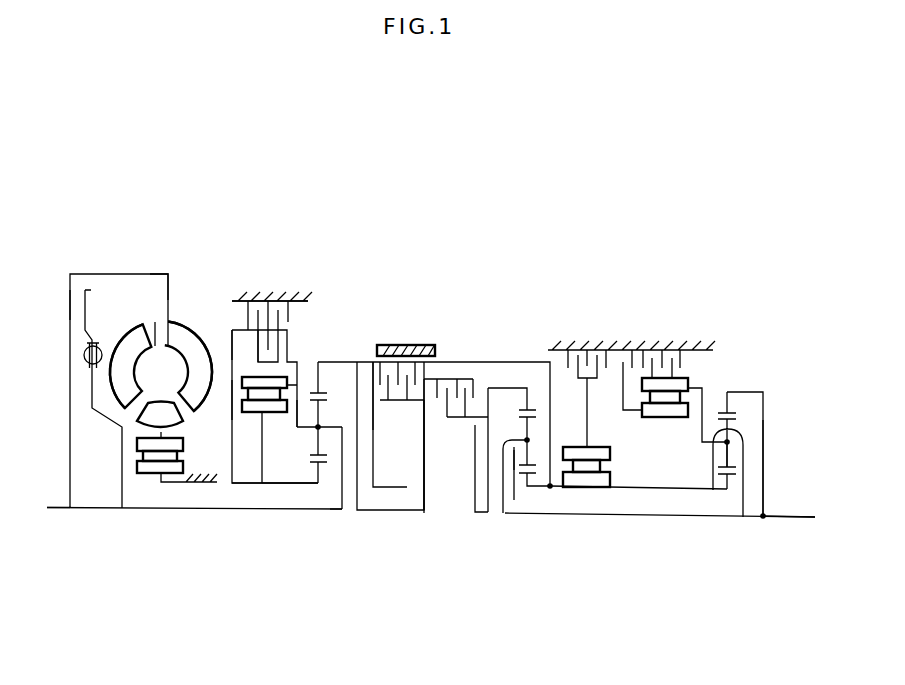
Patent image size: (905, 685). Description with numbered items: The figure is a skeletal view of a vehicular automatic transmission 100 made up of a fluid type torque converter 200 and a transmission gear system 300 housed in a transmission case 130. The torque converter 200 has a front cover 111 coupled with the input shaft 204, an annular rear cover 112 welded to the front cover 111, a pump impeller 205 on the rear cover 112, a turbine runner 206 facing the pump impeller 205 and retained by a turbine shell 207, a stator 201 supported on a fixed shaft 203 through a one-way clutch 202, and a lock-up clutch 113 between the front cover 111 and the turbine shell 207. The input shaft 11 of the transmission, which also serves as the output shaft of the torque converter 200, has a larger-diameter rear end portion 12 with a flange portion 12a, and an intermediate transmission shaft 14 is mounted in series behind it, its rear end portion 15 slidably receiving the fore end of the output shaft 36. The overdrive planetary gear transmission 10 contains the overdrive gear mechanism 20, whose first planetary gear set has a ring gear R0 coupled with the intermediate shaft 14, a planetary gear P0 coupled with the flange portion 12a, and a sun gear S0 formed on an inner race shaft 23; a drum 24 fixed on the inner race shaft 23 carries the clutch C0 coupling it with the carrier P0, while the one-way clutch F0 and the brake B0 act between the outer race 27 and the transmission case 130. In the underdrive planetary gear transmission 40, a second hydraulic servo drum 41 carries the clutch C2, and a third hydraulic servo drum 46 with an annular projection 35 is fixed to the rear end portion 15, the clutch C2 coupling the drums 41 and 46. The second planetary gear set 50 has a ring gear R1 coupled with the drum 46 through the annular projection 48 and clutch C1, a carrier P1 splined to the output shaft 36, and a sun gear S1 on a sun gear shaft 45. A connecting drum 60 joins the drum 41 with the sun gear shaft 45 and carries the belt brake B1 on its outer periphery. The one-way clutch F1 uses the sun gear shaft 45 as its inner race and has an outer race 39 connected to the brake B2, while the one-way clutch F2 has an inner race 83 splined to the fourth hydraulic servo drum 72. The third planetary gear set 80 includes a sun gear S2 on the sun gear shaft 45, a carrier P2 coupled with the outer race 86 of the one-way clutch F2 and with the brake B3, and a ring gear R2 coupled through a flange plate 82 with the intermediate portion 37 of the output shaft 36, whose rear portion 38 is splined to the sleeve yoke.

The vehicular automatic transmission 100 is at (215, 265).
The overdrive planetary gear transmission 10 is at (240, 278).
The input shaft 11 is at (252, 485).
The rear end portion 12 is at (342, 500).
The flange portion 12a is at (345, 512).
The intermediate transmission shaft 14 is at (390, 420).
The rear end portion 15 is at (417, 512).
The overdrive gear mechanism 20 is at (302, 485).
The inner race shaft 23 is at (278, 488).
The first hydraulic servo drum 24 is at (231, 398).
The outer race 27 is at (268, 380).
The annular projection 35 is at (437, 362).
The output shaft 36 is at (568, 495).
The intermediate portion 37 is at (763, 518).
The rear portion 38 is at (798, 525).
The outer race 39 is at (618, 455).
The underdrive planetary gear transmission 40 is at (737, 368).
The second hydraulic servo drum 41 is at (372, 403).
The sun gear shaft 45 is at (663, 492).
The third hydraulic servo drum 46 is at (423, 440).
The annular projection 48 is at (473, 422).
The second planetary gear set 50 is at (517, 452).
The connecting drum 60 is at (463, 362).
The fourth hydraulic servo drum 72 is at (605, 378).
The third planetary gear set 80 is at (714, 455).
The flange plate 82 is at (765, 458).
The inner race 83 is at (688, 405).
The outer race 86 is at (673, 387).
The front cover 111 is at (72, 385).
The annular rear cover 112 is at (170, 289).
The direct-coupling (lock-up) clutch 113 is at (73, 302).
The transmission case 130 is at (292, 300).
The fluid type torque converter 200 is at (132, 322).
The stator 201 is at (140, 436).
The one-way clutch 202 is at (137, 487).
The fixed shaft 203 is at (165, 485).
The input shaft 204 is at (57, 512).
The pump impeller 205 is at (190, 353).
The turbine runner 206 is at (140, 342).
The turbine shell 207 is at (80, 312).
The transmission gear system 300 is at (343, 292).
The multi-disk brake B0 is at (267, 297).
The belt brake B1 is at (405, 344).
The multi-disk brake B2 is at (570, 345).
The multi-disk brake B3 is at (637, 347).
The multi-disk clutch C0 is at (253, 352).
The clutch C1 is at (450, 430).
The clutch C2 is at (400, 512).
The one-way clutch F0 is at (252, 420).
The one-way clutch F1 is at (550, 490).
The one-way clutch F2 is at (657, 437).
The carrier P0 is at (345, 430).
The carrier P1 is at (503, 513).
The carrier P2 is at (743, 517).
The ring gear R0 is at (318, 392).
The ring gear R1 is at (535, 408).
The ring gear R2 is at (730, 412).
The sun gear S0 is at (313, 440).
The sun gear S1 is at (524, 478).
The sun gear S2 is at (728, 484).